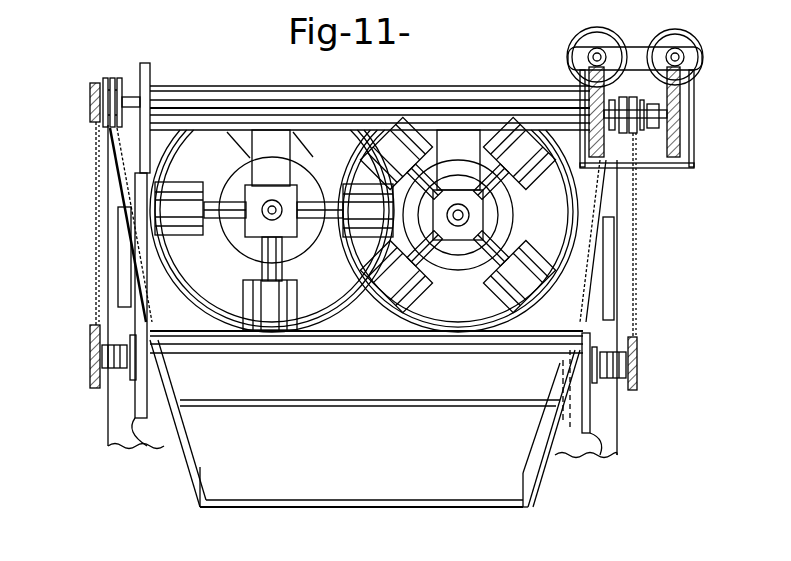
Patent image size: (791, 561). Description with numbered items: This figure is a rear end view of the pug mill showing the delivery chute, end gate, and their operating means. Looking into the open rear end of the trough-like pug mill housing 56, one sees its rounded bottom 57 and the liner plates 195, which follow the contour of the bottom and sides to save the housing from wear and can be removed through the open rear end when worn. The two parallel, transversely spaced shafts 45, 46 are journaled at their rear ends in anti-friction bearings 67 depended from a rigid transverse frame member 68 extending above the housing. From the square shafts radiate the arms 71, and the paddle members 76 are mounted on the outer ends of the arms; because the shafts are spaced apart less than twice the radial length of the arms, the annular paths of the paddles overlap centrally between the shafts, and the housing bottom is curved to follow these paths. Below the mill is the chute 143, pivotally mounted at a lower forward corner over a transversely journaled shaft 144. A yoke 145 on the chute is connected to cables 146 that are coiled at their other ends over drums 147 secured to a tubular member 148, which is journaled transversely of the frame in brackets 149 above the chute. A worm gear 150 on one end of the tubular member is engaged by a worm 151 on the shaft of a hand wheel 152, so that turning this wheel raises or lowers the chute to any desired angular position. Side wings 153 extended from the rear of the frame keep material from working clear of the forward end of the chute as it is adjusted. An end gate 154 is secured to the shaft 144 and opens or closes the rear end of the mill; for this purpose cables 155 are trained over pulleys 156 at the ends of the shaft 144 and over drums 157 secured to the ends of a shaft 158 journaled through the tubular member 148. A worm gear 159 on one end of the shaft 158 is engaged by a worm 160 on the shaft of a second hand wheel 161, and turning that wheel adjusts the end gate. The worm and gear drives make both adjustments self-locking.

The shaft 45 is at (458, 218).
The shaft 46 is at (250, 196).
The pug mill housing 56 is at (596, 198).
The rounded bottom 57 is at (382, 340).
The anti-friction bearings 67 is at (284, 198).
The transverse frame member 68 is at (318, 90).
The arms 71 is at (284, 254).
The paddle members 76 is at (240, 290).
The chute 143 is at (444, 500).
The shaft 144 is at (612, 384).
The yoke 145 is at (128, 448).
The cables 146 is at (114, 156).
The drums 147 is at (112, 78).
The tubular member 148 is at (412, 102).
The brackets 149 is at (152, 82).
The worm gear 150 is at (582, 138).
The worm 151 is at (566, 62).
The hand wheel 152 is at (566, 50).
The side wings 153 is at (128, 268).
The end gate 154 is at (444, 396).
The cables 155 is at (92, 292).
The pulleys 156 is at (92, 378).
The drums 157 is at (90, 86).
The shaft 158 is at (690, 122).
The worm gear 159 is at (694, 100).
The worm 160 is at (706, 56).
The hand wheel 161 is at (700, 42).
The liner plates 195 is at (348, 300).